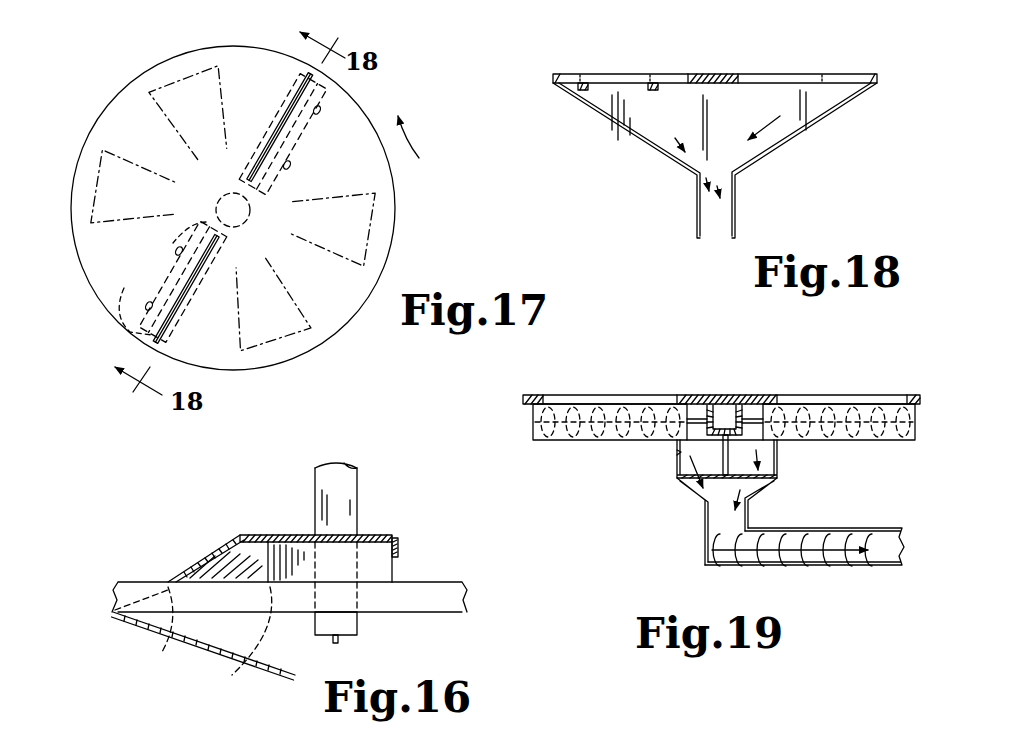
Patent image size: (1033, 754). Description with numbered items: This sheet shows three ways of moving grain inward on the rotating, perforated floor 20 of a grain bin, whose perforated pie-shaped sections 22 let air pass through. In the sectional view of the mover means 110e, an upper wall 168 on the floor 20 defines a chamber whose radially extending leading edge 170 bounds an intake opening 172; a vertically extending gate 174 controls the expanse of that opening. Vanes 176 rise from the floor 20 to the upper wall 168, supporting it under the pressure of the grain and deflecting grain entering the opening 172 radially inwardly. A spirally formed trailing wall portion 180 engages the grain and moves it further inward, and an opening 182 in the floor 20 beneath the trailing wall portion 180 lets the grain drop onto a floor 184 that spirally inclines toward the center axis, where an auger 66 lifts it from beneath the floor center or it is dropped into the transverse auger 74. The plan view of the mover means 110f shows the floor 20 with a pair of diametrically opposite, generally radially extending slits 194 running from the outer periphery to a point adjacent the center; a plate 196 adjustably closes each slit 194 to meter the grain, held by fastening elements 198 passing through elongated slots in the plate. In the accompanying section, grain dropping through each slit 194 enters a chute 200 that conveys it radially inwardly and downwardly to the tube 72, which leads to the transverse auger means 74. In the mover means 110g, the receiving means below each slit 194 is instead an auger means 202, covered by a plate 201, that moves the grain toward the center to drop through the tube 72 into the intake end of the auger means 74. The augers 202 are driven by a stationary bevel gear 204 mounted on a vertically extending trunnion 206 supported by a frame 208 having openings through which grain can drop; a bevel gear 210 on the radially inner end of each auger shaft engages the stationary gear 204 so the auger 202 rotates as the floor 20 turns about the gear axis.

In FIG. 18, the floor 20 is at (748, 73).
In FIG. 16, the floor 20 is at (130, 590).
In FIG. 17, the perforated portions of the floor 22 is at (175, 74).
In FIG. 16, the auger means 66 is at (314, 487).
In FIG. 18, the chute or tube 72 is at (706, 213).
In FIG. 19, the chute or tube 72 is at (677, 463).
In FIG. 19, the laterally extending auger means 74 is at (820, 578).
In FIG. 16, the mover 110e is at (399, 523).
In FIG. 17, the mover means 110f is at (292, 50).
In FIG. 18, the mover means 110f is at (581, 66).
In FIG. 19, the mover means 110g is at (567, 385).
In FIG. 16, the upper wall 168 is at (343, 537).
In FIG. 16, the leading edge 170 is at (397, 537).
In FIG. 16, the intake opening 172 is at (410, 568).
In FIG. 16, the gate 174 is at (400, 547).
In FIG. 16, the vanes 176 is at (375, 565).
In FIG. 16, the trailing wall portion 180 is at (211, 555).
In FIG. 16, the opening 182 is at (193, 642).
In FIG. 16, the floor 184 is at (207, 640).
In FIG. 17, the slits 194 is at (268, 150).
In FIG. 18, the slits 194 is at (620, 82).
In FIG. 19, the slits 194 is at (613, 400).
In FIG. 18, the plate 196 is at (605, 88).
In FIG. 17, the fastening elements 198 is at (183, 240).
In FIG. 18, the fastening elements 198 is at (578, 92).
In FIG. 18, the chute 200 is at (770, 133).
In FIG. 19, the cover plate 201 is at (884, 398).
In FIG. 19, the auger means 202 is at (633, 430).
In FIG. 19, the stationary bevel gear 204 is at (733, 412).
In FIG. 19, the trunnion 206 is at (757, 483).
In FIG. 19, the frame 208 is at (688, 484).
In FIG. 19, the bevel gear 210 is at (746, 381).